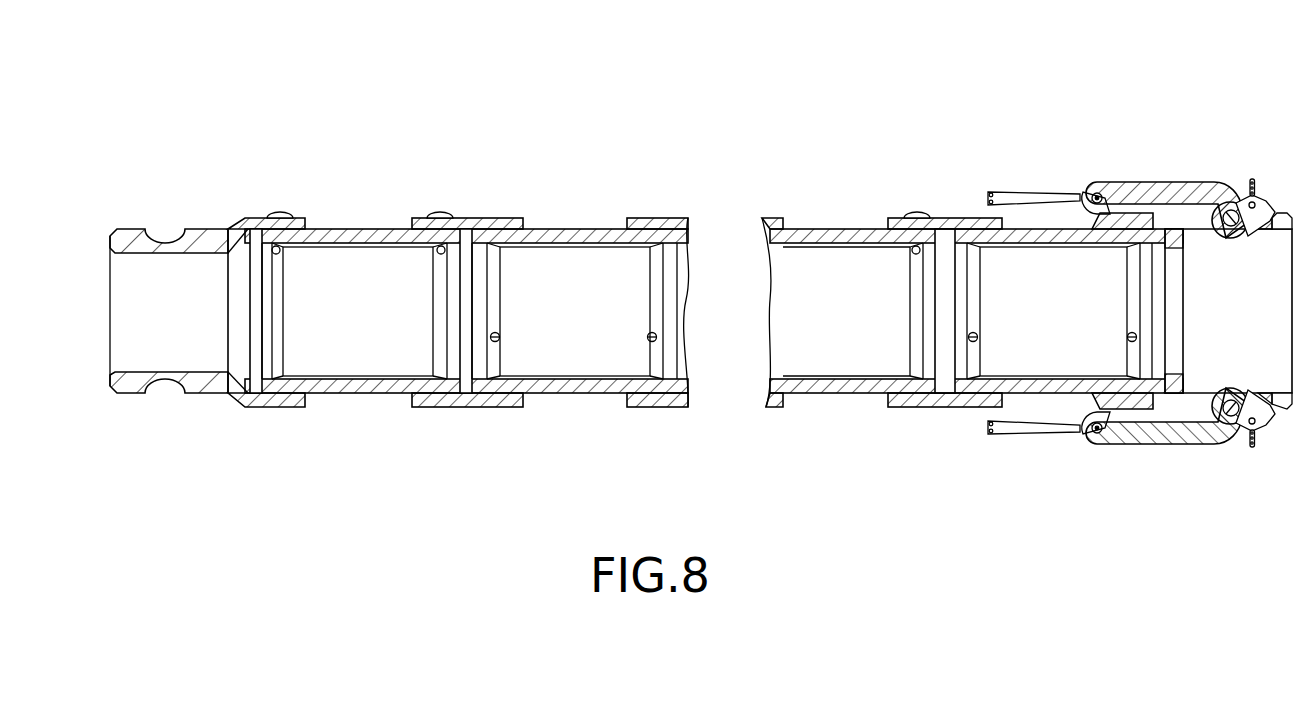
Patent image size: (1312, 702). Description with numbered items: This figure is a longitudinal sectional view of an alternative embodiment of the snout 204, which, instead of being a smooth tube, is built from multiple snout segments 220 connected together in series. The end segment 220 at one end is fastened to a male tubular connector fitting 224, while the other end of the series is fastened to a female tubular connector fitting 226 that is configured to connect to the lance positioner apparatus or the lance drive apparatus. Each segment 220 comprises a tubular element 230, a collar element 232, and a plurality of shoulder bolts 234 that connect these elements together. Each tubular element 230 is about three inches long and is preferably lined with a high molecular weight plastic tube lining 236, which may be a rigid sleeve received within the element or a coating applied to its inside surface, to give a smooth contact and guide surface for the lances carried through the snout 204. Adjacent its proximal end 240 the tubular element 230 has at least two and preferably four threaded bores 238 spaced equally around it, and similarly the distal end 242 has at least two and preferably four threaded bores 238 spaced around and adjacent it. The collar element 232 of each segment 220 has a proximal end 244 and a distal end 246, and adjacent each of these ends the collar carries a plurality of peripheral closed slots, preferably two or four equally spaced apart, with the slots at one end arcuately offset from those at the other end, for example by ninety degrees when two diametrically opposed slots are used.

The snout 204 is at (1105, 160).
The snout segment 220 is at (265, 425).
The male tubular connector fitting 224 is at (253, 212).
The female tubular connector fitting 226 is at (1238, 148).
The tubular element 230 is at (327, 229).
The collar element 232 is at (478, 218).
The shoulder bolt 234 is at (283, 215).
The plastic tube lining 236 is at (344, 246).
The threaded bore 238 is at (441, 251).
The proximal end 240 is at (259, 330).
The distal end 242 is at (460, 275).
The proximal end 244 is at (407, 218).
The distal end 246 is at (522, 229).